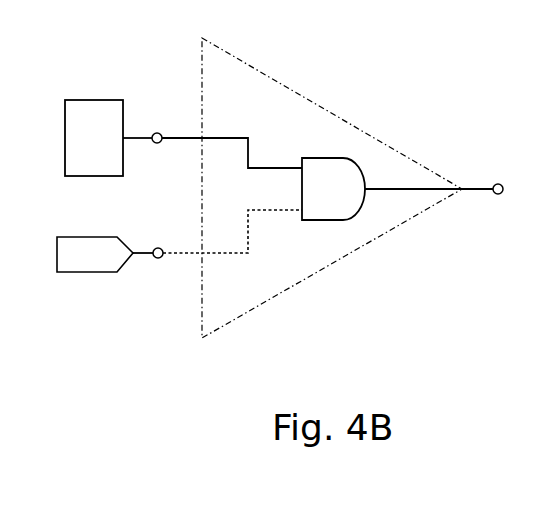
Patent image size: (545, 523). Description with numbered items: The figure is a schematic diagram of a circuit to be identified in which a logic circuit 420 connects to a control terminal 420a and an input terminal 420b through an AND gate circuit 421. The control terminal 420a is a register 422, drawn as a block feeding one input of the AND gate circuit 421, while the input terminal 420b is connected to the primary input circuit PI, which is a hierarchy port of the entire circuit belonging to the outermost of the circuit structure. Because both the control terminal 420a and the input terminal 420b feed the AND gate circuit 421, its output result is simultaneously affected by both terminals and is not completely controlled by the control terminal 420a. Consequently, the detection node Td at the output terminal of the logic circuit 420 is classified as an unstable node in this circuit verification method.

The logic circuit 420 is at (318, 104).
The control terminal 420a is at (157, 132).
The input terminal 420b is at (158, 247).
The AND gate circuit 421 is at (345, 166).
The register 422 is at (99, 99).
The primary input circuit PI is at (97, 273).
The detection node Td is at (498, 183).